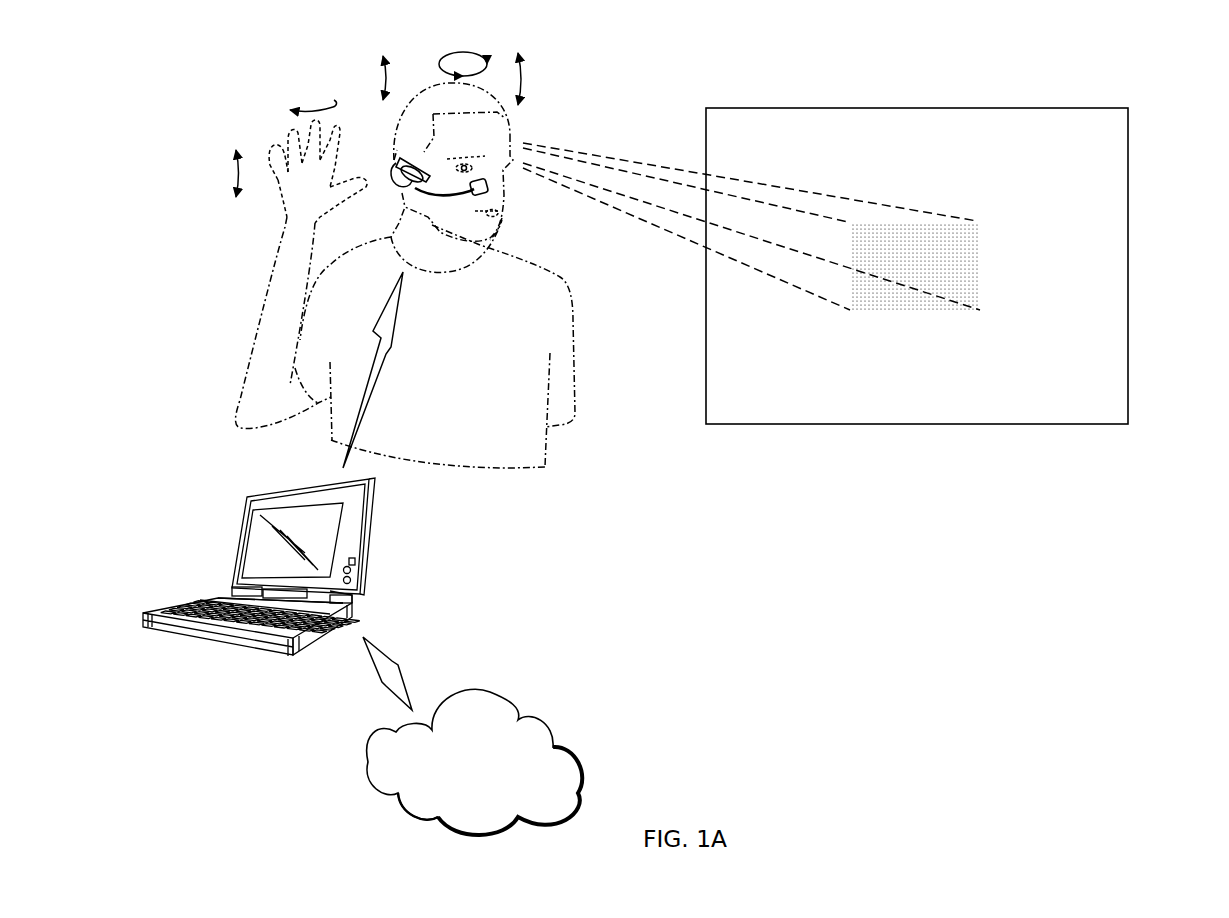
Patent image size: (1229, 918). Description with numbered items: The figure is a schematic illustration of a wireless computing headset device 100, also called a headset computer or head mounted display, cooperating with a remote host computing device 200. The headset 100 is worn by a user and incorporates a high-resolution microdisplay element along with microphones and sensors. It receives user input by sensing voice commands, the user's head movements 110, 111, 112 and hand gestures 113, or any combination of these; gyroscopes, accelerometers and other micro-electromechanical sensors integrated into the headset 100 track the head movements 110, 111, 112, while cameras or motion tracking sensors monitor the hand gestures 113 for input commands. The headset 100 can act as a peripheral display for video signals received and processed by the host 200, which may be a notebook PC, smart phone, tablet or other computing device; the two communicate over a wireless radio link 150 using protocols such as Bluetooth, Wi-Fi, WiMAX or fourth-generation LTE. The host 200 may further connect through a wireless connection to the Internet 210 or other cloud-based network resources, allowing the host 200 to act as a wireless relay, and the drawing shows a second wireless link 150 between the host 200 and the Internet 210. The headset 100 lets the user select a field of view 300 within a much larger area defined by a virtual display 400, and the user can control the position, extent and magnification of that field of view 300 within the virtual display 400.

The wireless computing headset device 100 is at (423, 195).
The head movement 110 is at (442, 65).
The head movement 111 is at (523, 83).
The head movement 112 is at (383, 80).
The hand gesture 113 is at (230, 172).
The wireless radio link 150 is at (363, 393).
The remote host computing device 200 is at (370, 537).
The Internet 210 is at (558, 747).
The field of view 300 is at (982, 262).
The virtual display 400 is at (801, 424).